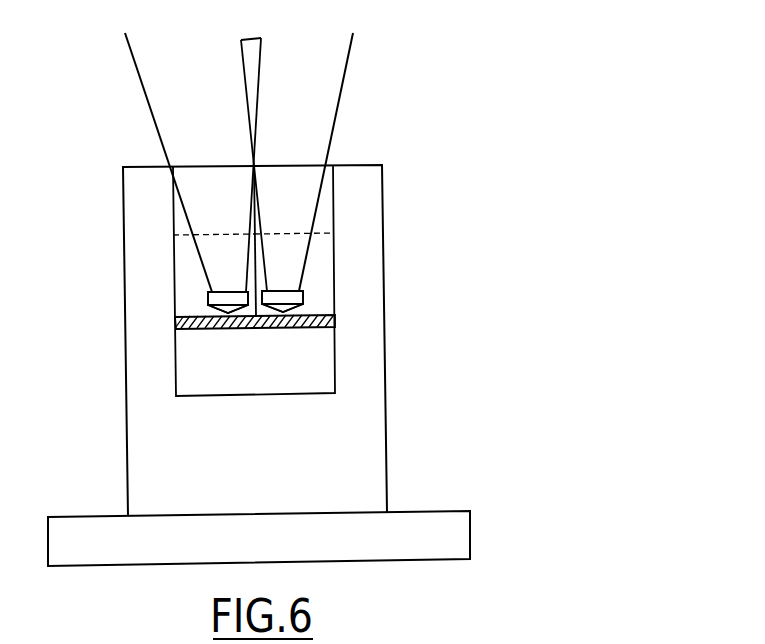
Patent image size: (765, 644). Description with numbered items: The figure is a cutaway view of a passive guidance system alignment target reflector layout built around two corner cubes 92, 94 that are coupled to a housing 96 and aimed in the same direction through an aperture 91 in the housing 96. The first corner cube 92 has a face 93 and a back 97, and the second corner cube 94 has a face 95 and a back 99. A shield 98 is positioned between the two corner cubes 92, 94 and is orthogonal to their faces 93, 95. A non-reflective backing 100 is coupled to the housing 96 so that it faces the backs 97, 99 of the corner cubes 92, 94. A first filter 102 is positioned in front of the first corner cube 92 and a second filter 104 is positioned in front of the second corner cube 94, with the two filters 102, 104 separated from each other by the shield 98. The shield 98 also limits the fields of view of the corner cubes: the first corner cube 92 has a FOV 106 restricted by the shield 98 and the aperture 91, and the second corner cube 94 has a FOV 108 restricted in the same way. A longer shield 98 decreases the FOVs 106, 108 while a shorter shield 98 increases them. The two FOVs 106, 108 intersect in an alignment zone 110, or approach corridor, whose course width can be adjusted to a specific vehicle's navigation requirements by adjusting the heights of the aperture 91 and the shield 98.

The aperture 91 is at (167, 172).
The first corner cube 92 is at (208, 293).
The face 93 is at (229, 290).
The second corner cube 94 is at (303, 291).
The face 95 is at (284, 290).
The housing 96 is at (387, 448).
The back 97 is at (207, 309).
The shield 98 is at (240, 192).
The back 99 is at (304, 307).
The non-reflective backing 100 is at (273, 331).
The first filter 102 is at (216, 232).
The second filter 104 is at (288, 232).
The FOV 106 is at (138, 73).
The FOV 108 is at (342, 90).
The alignment zone 110 is at (253, 37).